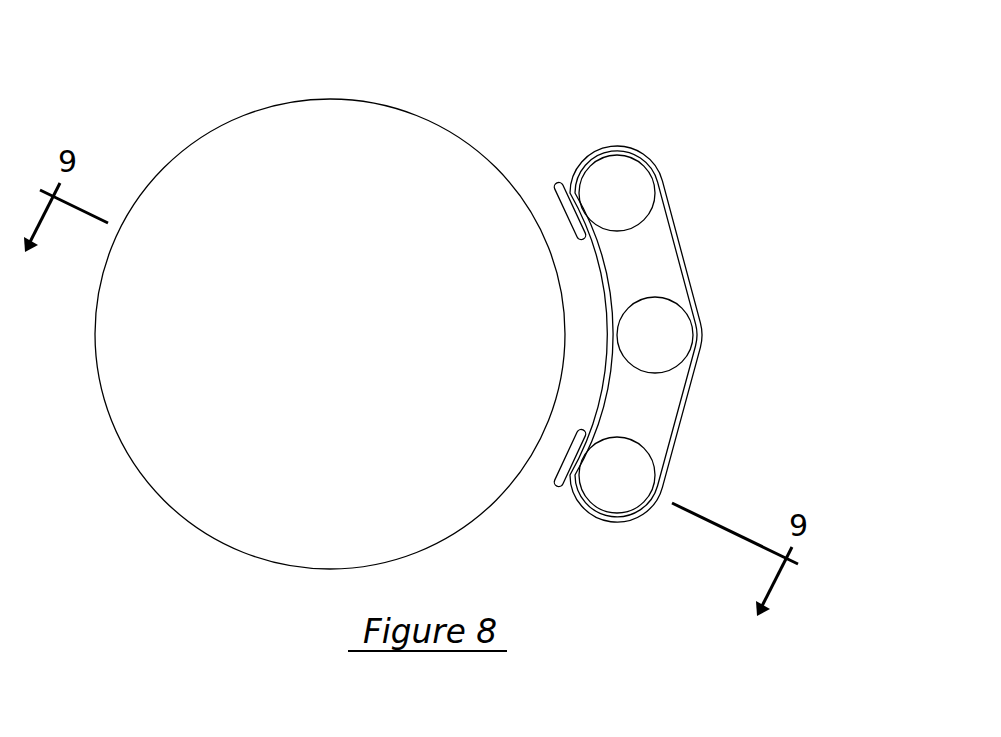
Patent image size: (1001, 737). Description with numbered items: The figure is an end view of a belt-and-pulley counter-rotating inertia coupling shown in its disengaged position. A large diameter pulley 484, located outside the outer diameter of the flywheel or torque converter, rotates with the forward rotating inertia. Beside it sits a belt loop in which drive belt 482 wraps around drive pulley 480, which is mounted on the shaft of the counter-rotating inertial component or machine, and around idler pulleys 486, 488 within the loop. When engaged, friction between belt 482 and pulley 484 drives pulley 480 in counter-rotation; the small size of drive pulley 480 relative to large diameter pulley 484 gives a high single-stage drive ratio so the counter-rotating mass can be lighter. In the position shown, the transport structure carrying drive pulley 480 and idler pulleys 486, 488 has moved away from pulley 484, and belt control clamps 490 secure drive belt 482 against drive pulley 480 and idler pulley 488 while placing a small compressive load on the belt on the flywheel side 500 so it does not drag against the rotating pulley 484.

The large diameter pulley 484 is at (332, 100).
The flywheel side 500 is at (631, 329).
The drive belt 482 is at (693, 380).
The idler pulley 488 is at (623, 192).
The idler pulley 486 is at (648, 357).
The drive pulley 480 is at (630, 472).
The belt control clamps 490 is at (556, 185).